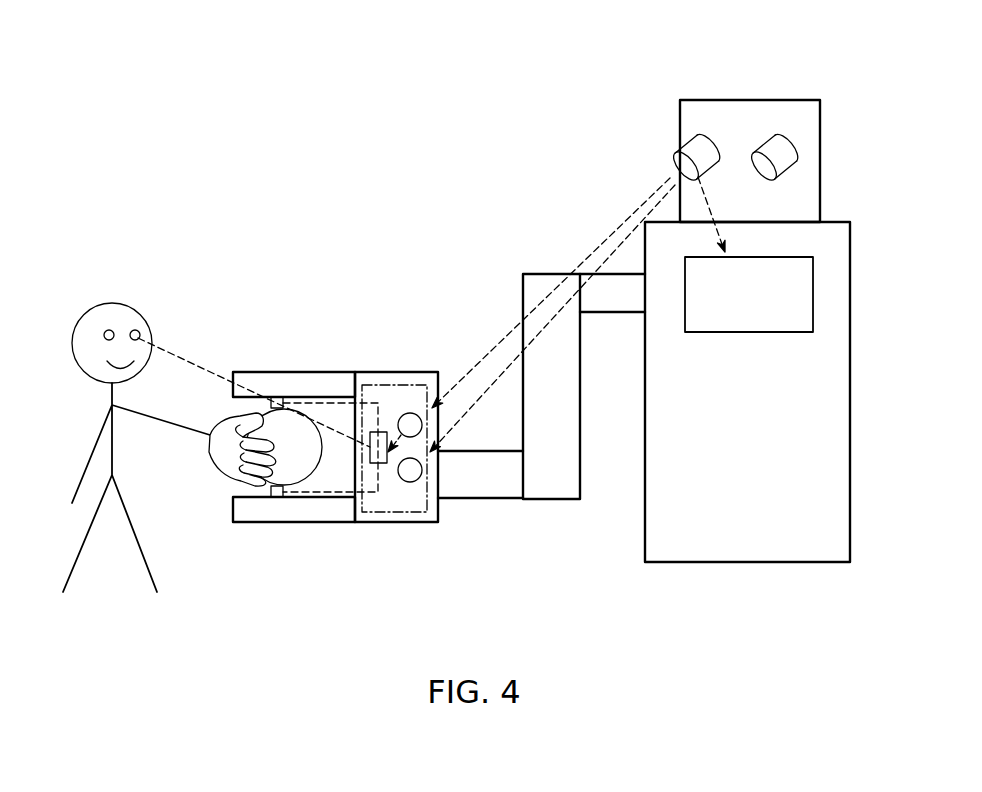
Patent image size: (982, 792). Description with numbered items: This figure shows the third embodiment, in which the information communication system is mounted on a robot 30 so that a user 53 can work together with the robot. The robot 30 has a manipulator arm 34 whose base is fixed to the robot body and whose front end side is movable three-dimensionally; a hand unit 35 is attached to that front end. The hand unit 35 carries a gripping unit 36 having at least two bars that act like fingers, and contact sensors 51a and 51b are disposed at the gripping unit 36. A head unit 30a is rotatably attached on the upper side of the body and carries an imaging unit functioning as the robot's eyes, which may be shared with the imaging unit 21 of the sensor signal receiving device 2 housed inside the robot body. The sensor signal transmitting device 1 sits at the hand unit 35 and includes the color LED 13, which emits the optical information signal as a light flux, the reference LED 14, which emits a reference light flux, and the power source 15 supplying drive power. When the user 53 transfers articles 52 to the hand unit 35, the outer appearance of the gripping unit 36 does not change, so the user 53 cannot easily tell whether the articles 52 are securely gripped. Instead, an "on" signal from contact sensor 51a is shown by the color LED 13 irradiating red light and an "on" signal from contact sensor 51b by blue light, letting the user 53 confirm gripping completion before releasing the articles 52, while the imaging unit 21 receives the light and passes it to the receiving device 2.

The sensor signal transmitting device 1 is at (378, 512).
The sensor signal receiving device 2 is at (813, 291).
The color LED 13 is at (414, 482).
The reference LED 14 is at (412, 413).
The power source 15 is at (378, 432).
The imaging unit 21 is at (700, 140).
The robot 30 is at (850, 443).
The head unit 30a is at (800, 100).
The arm 34 is at (548, 499).
The hand unit 35 is at (413, 522).
The gripping unit 36 is at (240, 522).
The contact sensor 51a is at (276, 500).
The contact sensor 51b is at (278, 400).
The articles 52 is at (263, 484).
The user 53 is at (102, 400).